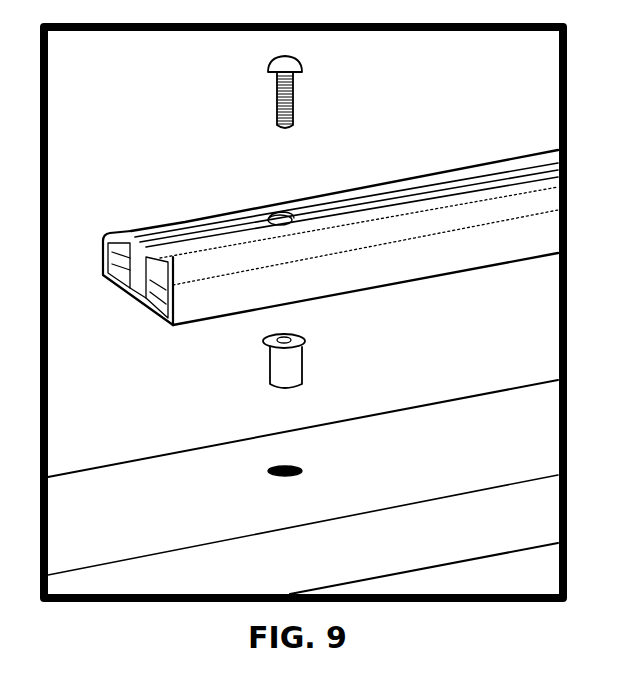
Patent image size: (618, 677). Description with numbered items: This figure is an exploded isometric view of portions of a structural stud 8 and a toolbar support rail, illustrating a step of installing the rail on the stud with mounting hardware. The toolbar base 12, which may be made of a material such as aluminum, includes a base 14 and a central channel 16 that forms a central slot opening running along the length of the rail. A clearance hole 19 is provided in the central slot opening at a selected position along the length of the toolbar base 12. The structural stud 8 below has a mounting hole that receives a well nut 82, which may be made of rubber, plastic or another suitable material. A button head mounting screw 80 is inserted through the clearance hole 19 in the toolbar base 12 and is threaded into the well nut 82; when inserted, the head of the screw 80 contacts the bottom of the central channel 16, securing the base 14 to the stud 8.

The structural stud 8 is at (455, 428).
The toolbar base 12 is at (182, 219).
The base 14 is at (112, 293).
The central channel 16 is at (137, 257).
The clearance hole 19 is at (278, 220).
The button head mounting screw 80 is at (300, 82).
The well nut 82 is at (272, 370).